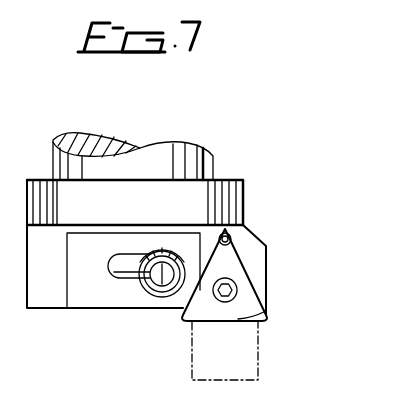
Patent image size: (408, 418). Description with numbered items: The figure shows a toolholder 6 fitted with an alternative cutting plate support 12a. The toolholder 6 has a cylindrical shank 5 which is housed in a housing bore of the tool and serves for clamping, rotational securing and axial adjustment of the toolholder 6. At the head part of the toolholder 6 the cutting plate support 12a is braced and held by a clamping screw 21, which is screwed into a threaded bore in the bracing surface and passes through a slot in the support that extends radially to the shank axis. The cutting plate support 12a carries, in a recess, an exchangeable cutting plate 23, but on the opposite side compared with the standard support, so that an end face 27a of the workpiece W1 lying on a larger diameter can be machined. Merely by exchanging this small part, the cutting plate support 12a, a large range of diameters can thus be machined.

The cylindrical shank 5 is at (215, 166).
The toolholder 6 is at (245, 199).
The cutting plate support 12a is at (246, 249).
The clamping screw 21 is at (160, 300).
The cutting plate 23 is at (270, 290).
The end face 27a is at (240, 318).
The workpiece W1 is at (258, 364).